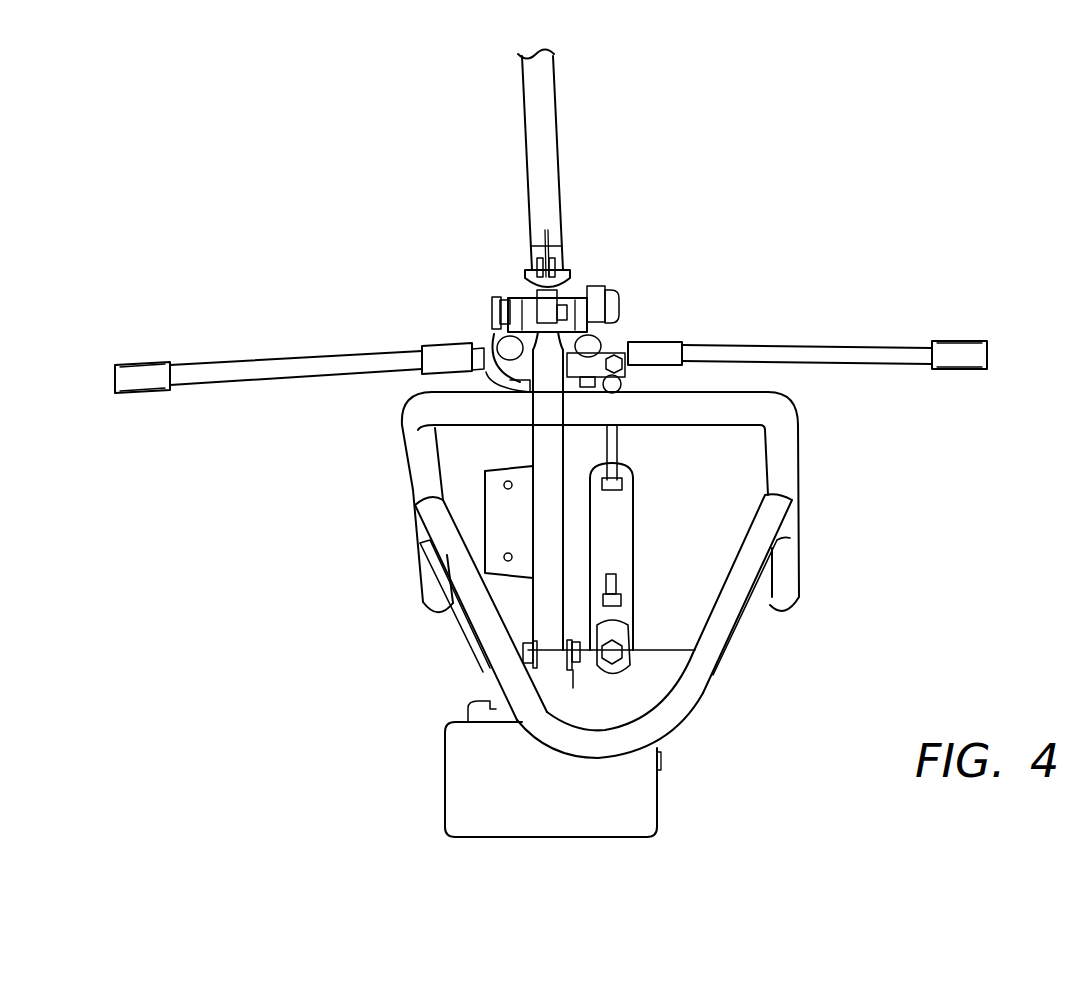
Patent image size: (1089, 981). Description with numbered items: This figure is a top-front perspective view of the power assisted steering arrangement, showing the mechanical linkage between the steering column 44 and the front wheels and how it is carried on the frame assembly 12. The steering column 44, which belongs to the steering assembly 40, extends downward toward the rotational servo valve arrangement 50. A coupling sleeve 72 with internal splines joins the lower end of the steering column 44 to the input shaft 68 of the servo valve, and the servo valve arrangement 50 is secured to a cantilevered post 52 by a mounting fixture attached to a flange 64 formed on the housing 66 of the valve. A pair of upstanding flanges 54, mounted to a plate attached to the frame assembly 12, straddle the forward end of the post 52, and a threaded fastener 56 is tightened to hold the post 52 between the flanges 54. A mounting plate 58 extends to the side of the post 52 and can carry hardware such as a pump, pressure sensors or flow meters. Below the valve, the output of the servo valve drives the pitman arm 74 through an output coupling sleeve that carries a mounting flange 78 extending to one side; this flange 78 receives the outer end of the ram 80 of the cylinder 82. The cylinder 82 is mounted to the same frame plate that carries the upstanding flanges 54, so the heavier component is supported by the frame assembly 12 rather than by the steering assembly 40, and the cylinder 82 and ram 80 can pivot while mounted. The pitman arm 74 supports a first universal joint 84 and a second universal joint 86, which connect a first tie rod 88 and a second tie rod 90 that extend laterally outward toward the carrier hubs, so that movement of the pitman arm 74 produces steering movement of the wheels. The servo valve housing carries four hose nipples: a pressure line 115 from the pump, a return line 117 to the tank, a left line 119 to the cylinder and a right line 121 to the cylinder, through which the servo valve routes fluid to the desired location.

The frame assembly 12 is at (332, 440).
The steering assembly 40 is at (714, 103).
The steering column 44 is at (548, 113).
The servo valve arrangement 50 is at (602, 258).
The cantilevered post 52 is at (548, 455).
The upstanding flanges 54 is at (573, 678).
The threaded fastener 56 is at (528, 642).
The mounting plate 58 is at (500, 538).
The flange 64 is at (536, 262).
The housing 66 is at (517, 302).
The input shaft 68 is at (568, 305).
The coupling sleeve 72 is at (547, 285).
The pitman arm 74 is at (496, 376).
The mounting flange 78 is at (595, 362).
The ram 80 is at (612, 442).
The cylinder 82 is at (620, 560).
The first universal joint 84 is at (498, 312).
The second universal joint 86 is at (600, 342).
The first tie rod 88 is at (248, 367).
The second tie rod 90 is at (790, 350).
The pressure line nipple 115 is at (612, 320).
The return line nipple 117 is at (600, 290).
The left line nipple 119 is at (490, 330).
The right line nipple 121 is at (490, 352).